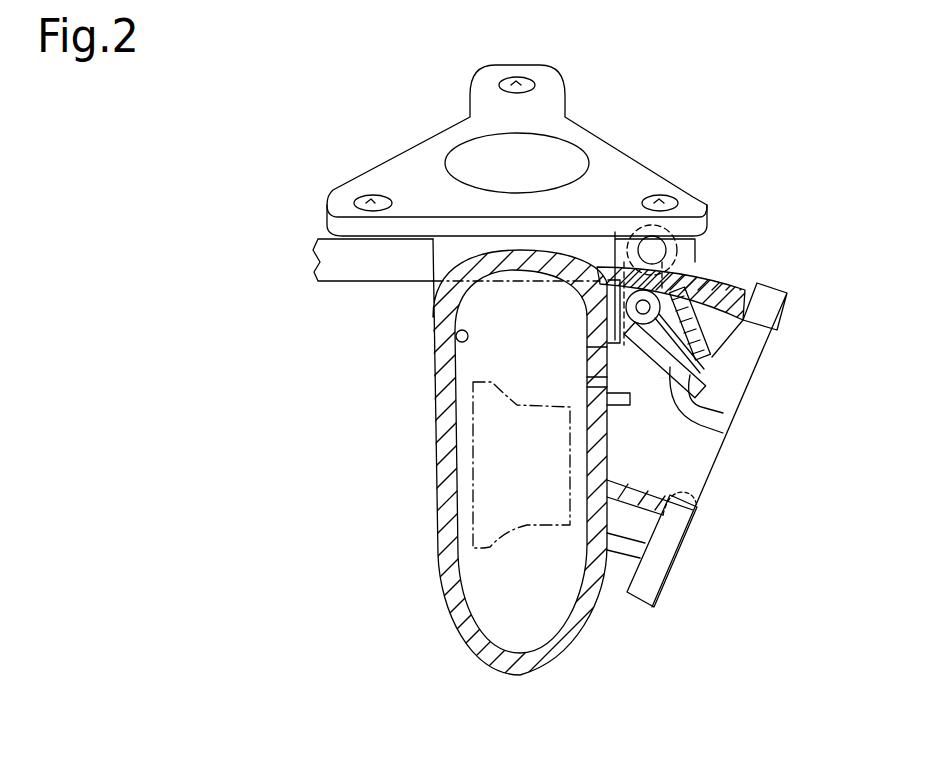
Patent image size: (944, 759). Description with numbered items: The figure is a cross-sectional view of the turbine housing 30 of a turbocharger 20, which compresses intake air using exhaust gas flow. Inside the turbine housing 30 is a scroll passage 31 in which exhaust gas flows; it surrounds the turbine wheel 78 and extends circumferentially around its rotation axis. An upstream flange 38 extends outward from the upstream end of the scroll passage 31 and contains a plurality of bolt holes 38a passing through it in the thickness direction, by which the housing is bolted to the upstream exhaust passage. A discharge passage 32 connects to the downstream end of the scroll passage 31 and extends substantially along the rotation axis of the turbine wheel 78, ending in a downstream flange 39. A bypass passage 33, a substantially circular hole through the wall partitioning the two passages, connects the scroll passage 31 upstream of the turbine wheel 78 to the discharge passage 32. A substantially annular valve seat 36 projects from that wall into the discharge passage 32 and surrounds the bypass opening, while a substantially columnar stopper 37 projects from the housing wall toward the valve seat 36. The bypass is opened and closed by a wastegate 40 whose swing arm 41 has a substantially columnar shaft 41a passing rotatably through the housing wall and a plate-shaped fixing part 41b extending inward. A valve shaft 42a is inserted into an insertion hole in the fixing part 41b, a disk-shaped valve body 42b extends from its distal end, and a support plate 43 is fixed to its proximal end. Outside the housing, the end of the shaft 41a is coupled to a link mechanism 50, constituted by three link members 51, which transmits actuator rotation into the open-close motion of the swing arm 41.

The turbocharger 20 is at (236, 105).
The turbine housing 30 is at (615, 148).
The scroll passage 31 is at (455, 337).
The discharge passage 32 is at (697, 500).
The bypass passage 33 is at (588, 378).
The valve seat 36 is at (629, 415).
The stopper 37 is at (717, 343).
The upstream flange 38 is at (417, 152).
The bolt holes 38a is at (367, 199).
The downstream flange 39 is at (787, 288).
The wastegate 40 is at (677, 407).
The swing arm 41 is at (664, 344).
The shaft 41a is at (590, 327).
The fixing part 41b is at (740, 392).
The valve shaft 42a is at (733, 270).
The valve body 42b is at (747, 413).
The support plate 43 is at (705, 370).
The link mechanism 50 is at (345, 283).
The link members 51 is at (702, 248).
The turbine wheel 78 is at (484, 550).